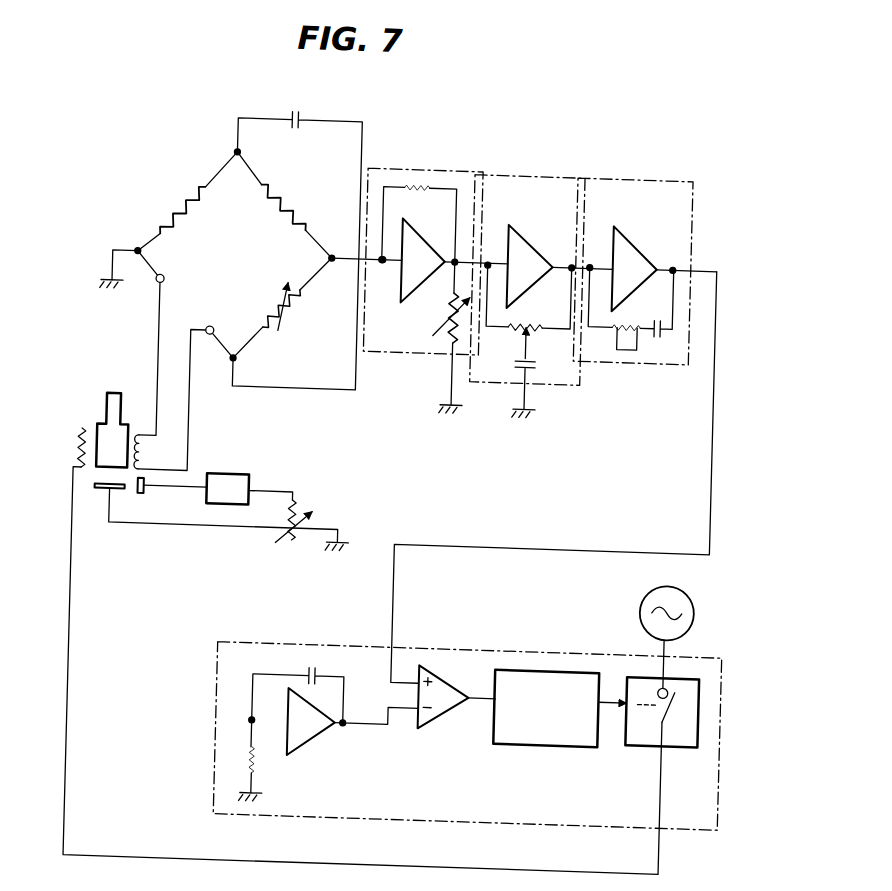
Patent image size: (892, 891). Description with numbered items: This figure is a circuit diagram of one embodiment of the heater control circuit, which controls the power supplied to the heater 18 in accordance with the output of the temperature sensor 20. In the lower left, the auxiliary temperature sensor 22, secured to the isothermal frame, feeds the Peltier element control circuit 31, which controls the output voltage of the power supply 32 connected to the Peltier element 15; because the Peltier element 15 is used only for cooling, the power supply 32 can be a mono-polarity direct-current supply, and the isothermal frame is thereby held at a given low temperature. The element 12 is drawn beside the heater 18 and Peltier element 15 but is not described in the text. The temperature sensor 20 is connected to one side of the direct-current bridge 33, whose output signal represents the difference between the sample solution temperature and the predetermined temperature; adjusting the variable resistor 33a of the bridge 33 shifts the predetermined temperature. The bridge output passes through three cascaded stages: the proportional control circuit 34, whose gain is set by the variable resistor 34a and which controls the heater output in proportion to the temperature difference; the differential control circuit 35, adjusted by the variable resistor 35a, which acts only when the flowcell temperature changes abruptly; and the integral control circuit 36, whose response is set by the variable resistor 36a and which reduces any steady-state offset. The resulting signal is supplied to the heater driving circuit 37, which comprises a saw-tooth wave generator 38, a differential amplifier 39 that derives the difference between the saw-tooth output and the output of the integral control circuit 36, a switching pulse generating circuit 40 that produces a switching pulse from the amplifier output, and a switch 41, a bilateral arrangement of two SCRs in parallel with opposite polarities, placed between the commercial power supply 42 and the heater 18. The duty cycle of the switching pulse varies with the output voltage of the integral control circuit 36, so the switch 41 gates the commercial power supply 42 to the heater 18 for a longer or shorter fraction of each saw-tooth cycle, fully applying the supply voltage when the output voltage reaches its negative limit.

The heater body 12 is at (97, 434).
The Peltier element 15 is at (112, 503).
The heater 18 is at (80, 457).
The temperature sensor 20 is at (142, 460).
The auxiliary temperature sensor 22 is at (145, 505).
The Peltier element control circuit 31 is at (241, 482).
The power supply 32 is at (291, 550).
The D.C. bridge 33 is at (246, 258).
The variable resistor of the bridge 33a is at (287, 317).
The proportional control circuit 34 is at (416, 189).
The variable resistor 34a is at (434, 333).
The differential control circuit 35 is at (511, 168).
The variable resistor 35a is at (532, 330).
The integral control circuit 36 is at (611, 172).
The variable resistor 36a is at (605, 332).
The heater driving circuit 37 is at (495, 648).
The saw-tooth wave generator 38 is at (325, 741).
The differential amplifier 39 is at (452, 717).
The switching pulse generating circuit 40 is at (578, 744).
The switch 41 is at (705, 698).
The commercial power supply 42 is at (644, 603).